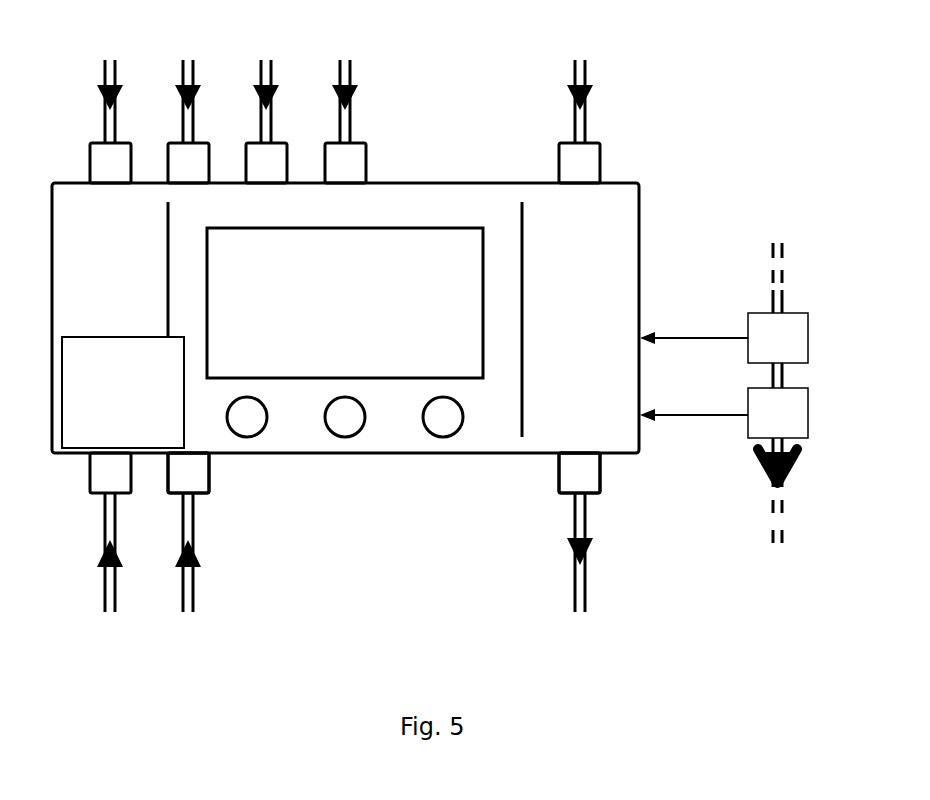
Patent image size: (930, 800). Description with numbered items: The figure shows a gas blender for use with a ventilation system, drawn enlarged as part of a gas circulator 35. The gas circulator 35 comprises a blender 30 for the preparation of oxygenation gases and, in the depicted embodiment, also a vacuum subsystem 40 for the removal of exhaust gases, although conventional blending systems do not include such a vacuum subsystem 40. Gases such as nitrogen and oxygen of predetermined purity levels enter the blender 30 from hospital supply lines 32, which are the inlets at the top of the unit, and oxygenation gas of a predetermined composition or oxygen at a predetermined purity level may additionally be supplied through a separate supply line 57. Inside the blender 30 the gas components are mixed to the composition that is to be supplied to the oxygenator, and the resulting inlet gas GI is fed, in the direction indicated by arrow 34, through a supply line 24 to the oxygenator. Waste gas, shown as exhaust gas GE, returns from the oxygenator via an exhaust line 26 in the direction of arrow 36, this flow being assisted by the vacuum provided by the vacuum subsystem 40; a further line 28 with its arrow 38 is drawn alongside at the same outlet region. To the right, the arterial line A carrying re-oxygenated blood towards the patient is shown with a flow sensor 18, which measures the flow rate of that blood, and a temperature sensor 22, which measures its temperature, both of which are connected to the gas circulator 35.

The gas circulator 35 is at (496, 44).
The blender 30 is at (366, 315).
The vacuum subsystem 40 is at (138, 401).
The hospital supply lines 32 is at (352, 68).
The supply line 57 is at (590, 65).
The gas line 28 is at (102, 592).
The flow direction arrow 38 is at (102, 558).
The exhaust line 26 is at (195, 582).
The arrow 36 is at (202, 557).
The supply line 24 is at (572, 585).
The arrow 34 is at (570, 547).
The flow sensor 18 is at (794, 351).
The temperature sensor 22 is at (794, 426).
The arterial line A is at (772, 291).
The exhaust gas GE is at (212, 483).
The inlet gas GI is at (558, 478).